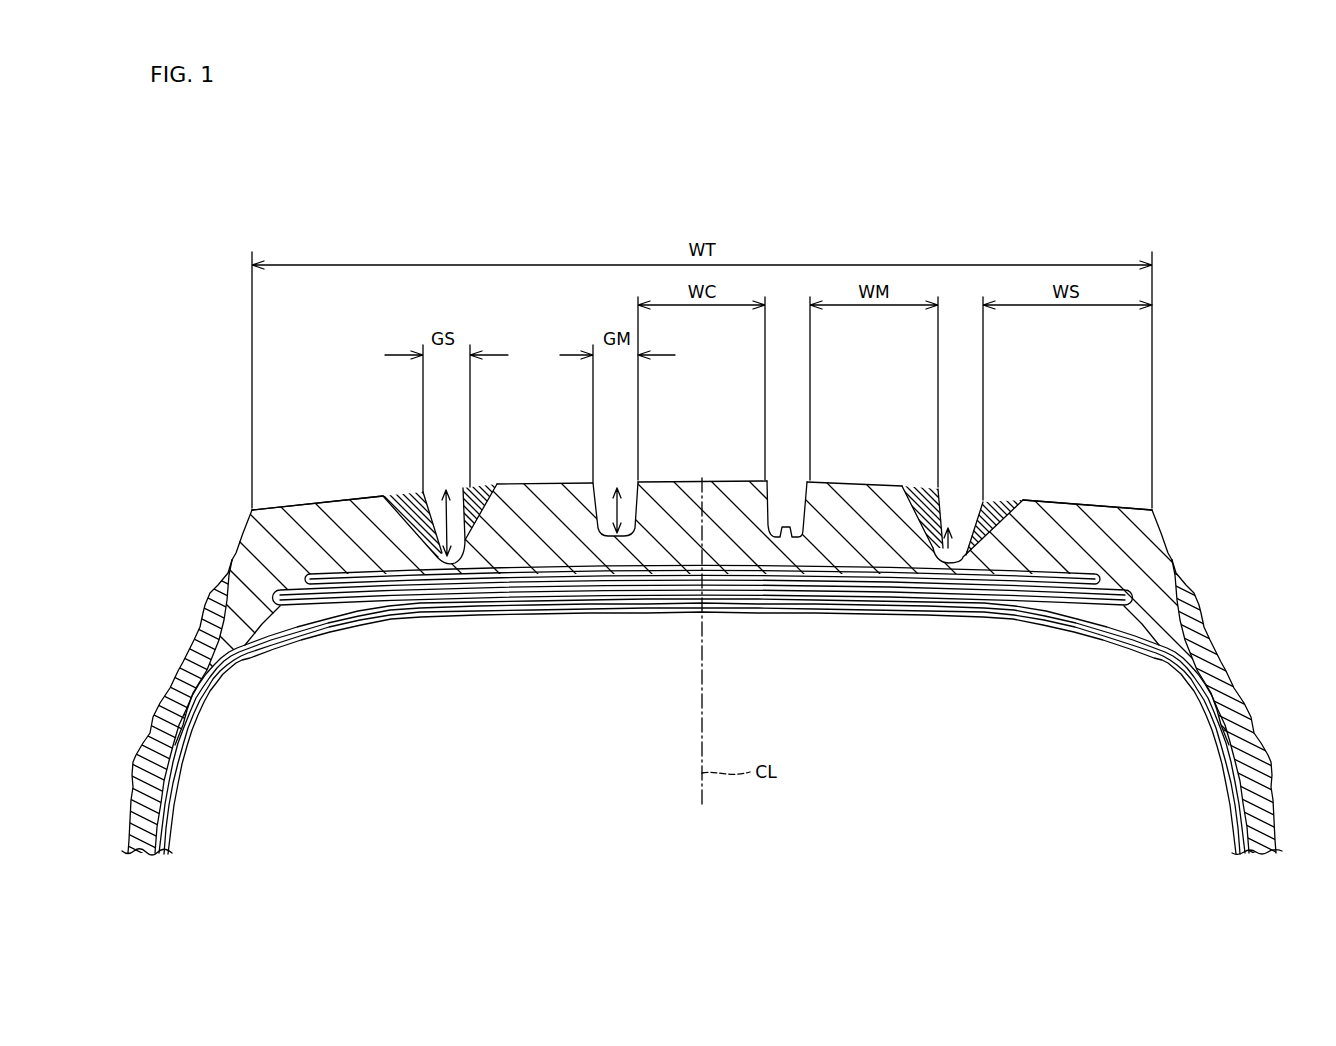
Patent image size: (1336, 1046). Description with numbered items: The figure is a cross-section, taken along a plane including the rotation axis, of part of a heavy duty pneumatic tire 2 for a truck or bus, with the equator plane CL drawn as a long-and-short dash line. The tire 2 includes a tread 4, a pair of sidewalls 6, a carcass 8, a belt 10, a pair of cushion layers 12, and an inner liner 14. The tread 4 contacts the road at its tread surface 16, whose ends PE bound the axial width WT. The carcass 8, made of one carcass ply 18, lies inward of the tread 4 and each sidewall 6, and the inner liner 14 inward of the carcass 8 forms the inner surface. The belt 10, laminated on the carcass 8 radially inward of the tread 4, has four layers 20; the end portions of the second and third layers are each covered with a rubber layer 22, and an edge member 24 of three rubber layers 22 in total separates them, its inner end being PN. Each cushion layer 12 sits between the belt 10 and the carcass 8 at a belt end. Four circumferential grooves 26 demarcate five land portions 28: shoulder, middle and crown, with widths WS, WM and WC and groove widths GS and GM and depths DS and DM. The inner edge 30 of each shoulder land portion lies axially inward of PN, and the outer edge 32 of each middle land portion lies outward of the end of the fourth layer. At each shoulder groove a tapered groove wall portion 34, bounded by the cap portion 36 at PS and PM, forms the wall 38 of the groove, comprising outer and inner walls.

The heavy duty pneumatic tire 2 is at (1219, 384).
The tread 4 is at (267, 494).
The sidewall 6 is at (158, 743).
The carcass 8 is at (702, 726).
The belt 10 is at (763, 668).
The cushion layer 12 is at (233, 667).
The inner liner 14 is at (1218, 816).
The tread surface 16 is at (293, 506).
The carcass ply 18 is at (270, 660).
The layer 20 is at (457, 610).
The rubber layer 22 is at (1097, 572).
The edge member 24 is at (350, 598).
The circumferential groove 26 is at (960, 430).
The land portion 28 is at (1101, 520).
The inner edge 30 is at (982, 491).
The outer edge 32 is at (917, 486).
The groove wall portion 34 is at (387, 499).
The cap portion 36 is at (1135, 513).
The wall 38 is at (432, 520).